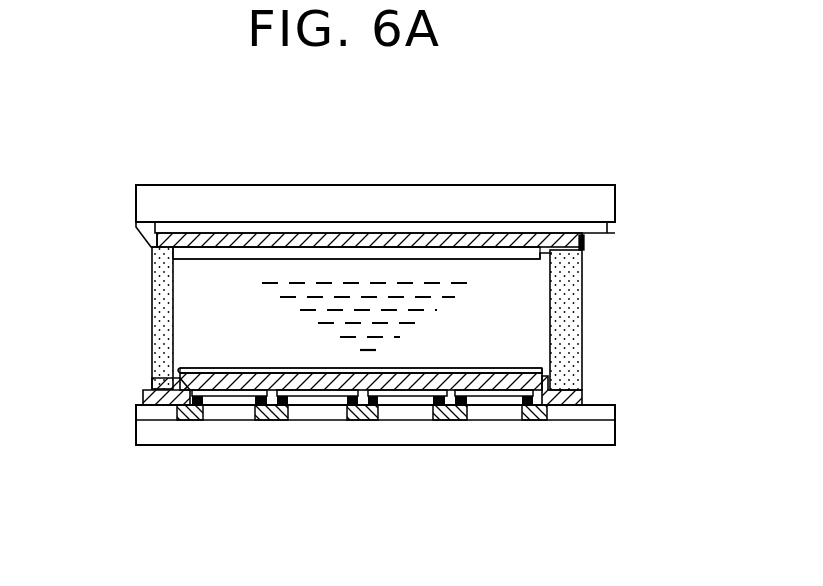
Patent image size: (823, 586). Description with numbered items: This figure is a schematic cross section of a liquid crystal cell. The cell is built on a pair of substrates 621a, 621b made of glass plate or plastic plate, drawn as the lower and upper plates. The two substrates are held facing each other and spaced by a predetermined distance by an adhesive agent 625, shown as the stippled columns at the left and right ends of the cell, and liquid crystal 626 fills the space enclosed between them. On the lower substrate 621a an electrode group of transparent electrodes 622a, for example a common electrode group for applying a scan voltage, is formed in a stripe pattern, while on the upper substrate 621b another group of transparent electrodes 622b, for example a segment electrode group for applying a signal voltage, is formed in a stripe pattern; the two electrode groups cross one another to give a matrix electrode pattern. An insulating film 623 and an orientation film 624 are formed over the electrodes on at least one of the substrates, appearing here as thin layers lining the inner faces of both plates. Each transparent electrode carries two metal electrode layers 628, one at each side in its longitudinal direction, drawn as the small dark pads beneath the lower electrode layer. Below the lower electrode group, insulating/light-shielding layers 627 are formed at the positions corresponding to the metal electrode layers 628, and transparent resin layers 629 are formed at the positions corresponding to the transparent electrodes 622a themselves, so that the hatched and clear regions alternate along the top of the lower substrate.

The substrate 621a is at (155, 433).
The substrate 621b is at (520, 192).
The transparent electrodes 622a is at (502, 395).
The transparent electrodes 622b is at (614, 232).
The insulating film 623 is at (585, 241).
The orientation film 624 is at (525, 251).
The adhesive agent 625 is at (575, 333).
The liquid crystal 626 is at (182, 272).
The insulating/light-shielding layers 627 is at (377, 412).
The metal electrode layers 628 is at (383, 400).
The transparent resin layers 629 is at (322, 412).